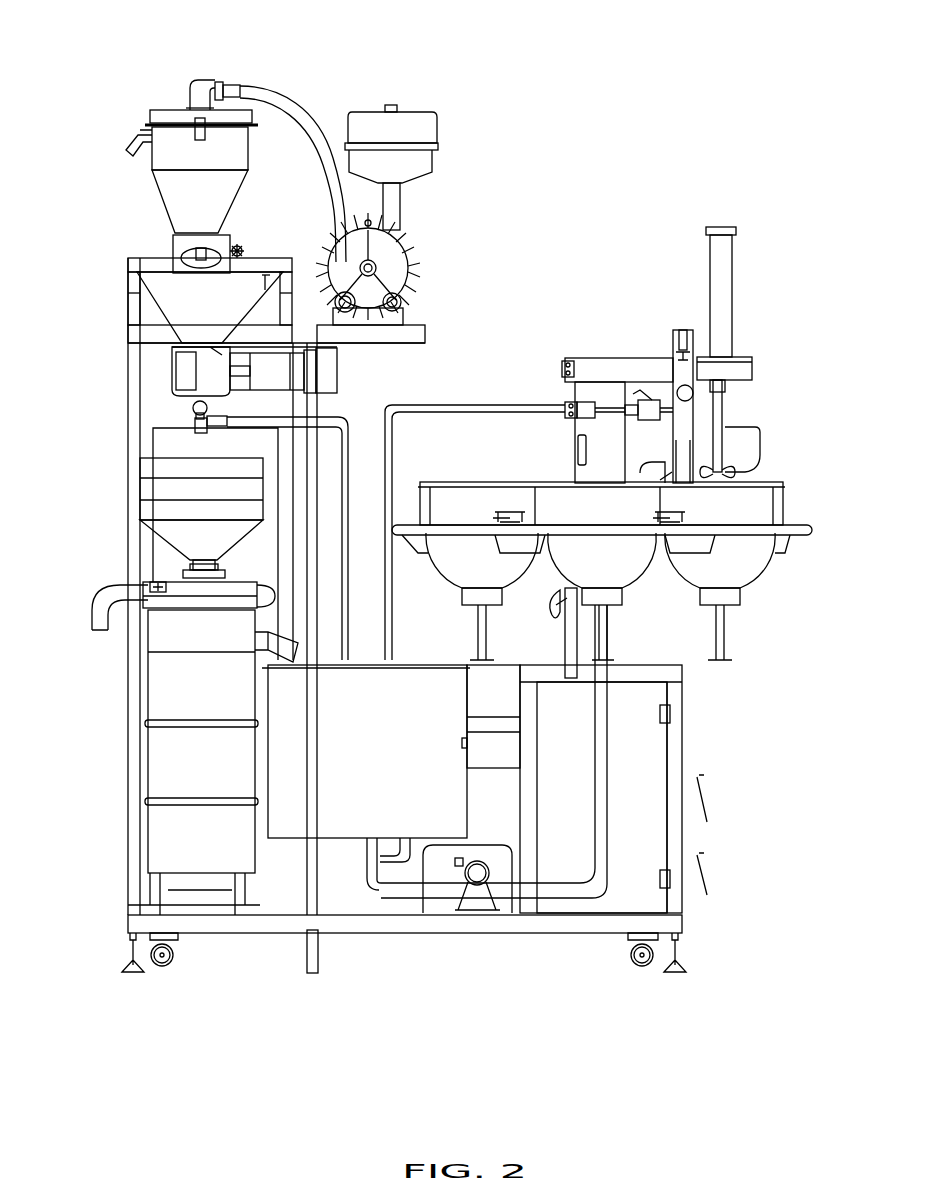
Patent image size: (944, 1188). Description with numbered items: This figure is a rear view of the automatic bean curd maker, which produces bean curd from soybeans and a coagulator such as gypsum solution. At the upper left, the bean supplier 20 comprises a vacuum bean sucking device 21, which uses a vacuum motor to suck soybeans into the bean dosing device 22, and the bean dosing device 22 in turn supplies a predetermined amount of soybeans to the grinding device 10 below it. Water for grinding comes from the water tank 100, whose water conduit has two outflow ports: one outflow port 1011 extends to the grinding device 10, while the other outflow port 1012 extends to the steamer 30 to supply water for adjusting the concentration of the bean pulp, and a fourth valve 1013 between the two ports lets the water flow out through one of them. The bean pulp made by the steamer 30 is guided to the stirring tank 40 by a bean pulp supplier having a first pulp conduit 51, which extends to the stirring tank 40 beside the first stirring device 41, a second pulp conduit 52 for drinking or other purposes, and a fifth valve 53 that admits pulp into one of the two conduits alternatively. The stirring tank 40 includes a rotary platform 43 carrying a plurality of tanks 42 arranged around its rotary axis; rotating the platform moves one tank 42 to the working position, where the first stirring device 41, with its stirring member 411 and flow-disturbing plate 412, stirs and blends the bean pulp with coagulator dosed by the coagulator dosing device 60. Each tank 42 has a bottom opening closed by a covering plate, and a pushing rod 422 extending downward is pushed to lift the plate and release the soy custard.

The grinding device 10 is at (183, 768).
The bean supplier 20 is at (170, 90).
The vacuum bean sucking device 21 is at (412, 117).
The bean dosing device 22 is at (162, 292).
The steamer 30 is at (350, 818).
The stirring tank 40 is at (773, 567).
The first stirring device 41 is at (826, 392).
The tank 42 is at (745, 572).
The rotary platform 43 is at (778, 530).
The first pulp conduit 51 is at (672, 410).
The second pulp conduit 52 is at (648, 400).
The fifth valve 53 is at (490, 405).
The coagulator dosing device 60 is at (692, 382).
The water tank 100 is at (152, 375).
The stirring member 411 is at (714, 418).
The flow-disturbing plate 412 is at (742, 444).
The pushing rod 422 is at (722, 640).
The outflow port 1011 is at (195, 432).
The outflow port 1012 is at (345, 420).
The fourth valve 1013 is at (192, 410).